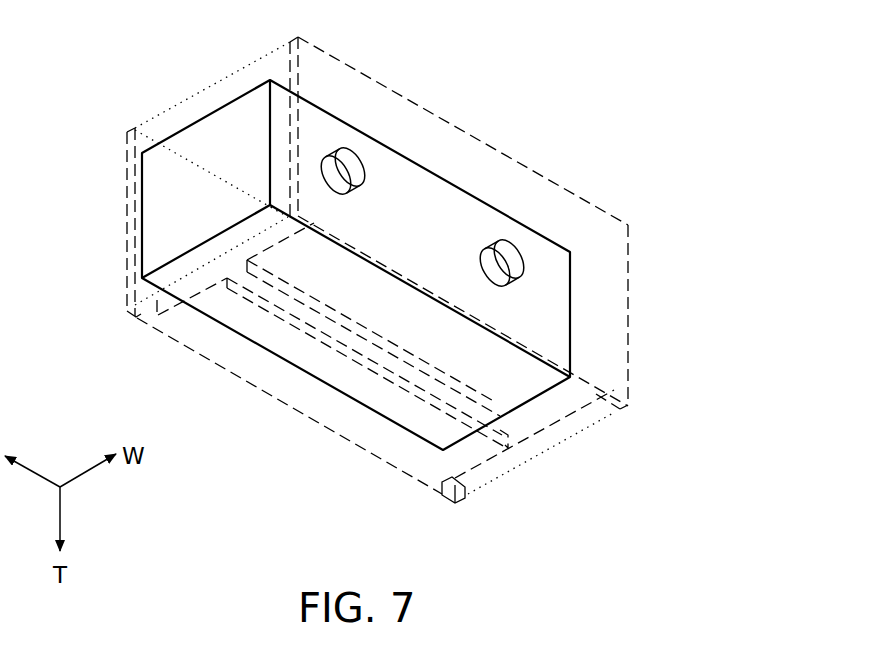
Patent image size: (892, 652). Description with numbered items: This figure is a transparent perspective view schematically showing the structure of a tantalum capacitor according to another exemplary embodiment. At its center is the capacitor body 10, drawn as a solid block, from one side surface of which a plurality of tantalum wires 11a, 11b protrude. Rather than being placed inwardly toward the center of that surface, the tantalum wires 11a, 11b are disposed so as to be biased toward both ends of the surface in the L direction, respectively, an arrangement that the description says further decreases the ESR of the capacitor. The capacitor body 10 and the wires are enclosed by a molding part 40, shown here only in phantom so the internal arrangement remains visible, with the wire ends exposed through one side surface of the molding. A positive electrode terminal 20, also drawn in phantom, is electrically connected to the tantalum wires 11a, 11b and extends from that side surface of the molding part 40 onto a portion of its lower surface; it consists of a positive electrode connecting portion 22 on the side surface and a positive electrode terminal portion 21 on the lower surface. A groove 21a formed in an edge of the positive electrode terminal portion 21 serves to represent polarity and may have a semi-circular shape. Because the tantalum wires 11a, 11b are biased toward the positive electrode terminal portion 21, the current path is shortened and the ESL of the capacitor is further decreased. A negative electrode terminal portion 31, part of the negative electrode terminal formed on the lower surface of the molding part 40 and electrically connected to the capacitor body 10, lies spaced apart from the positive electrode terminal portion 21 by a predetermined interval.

The capacitor body 10 is at (218, 136).
The tantalum wire 11a is at (355, 167).
The tantalum wire 11b is at (511, 259).
The positive electrode terminal 20 is at (452, 270).
The positive electrode terminal portion 21 is at (590, 381).
The groove 21a is at (392, 343).
The positive electrode connecting portion 22 is at (603, 306).
The negative electrode terminal portion 31 is at (283, 387).
The molding part 40 is at (530, 445).